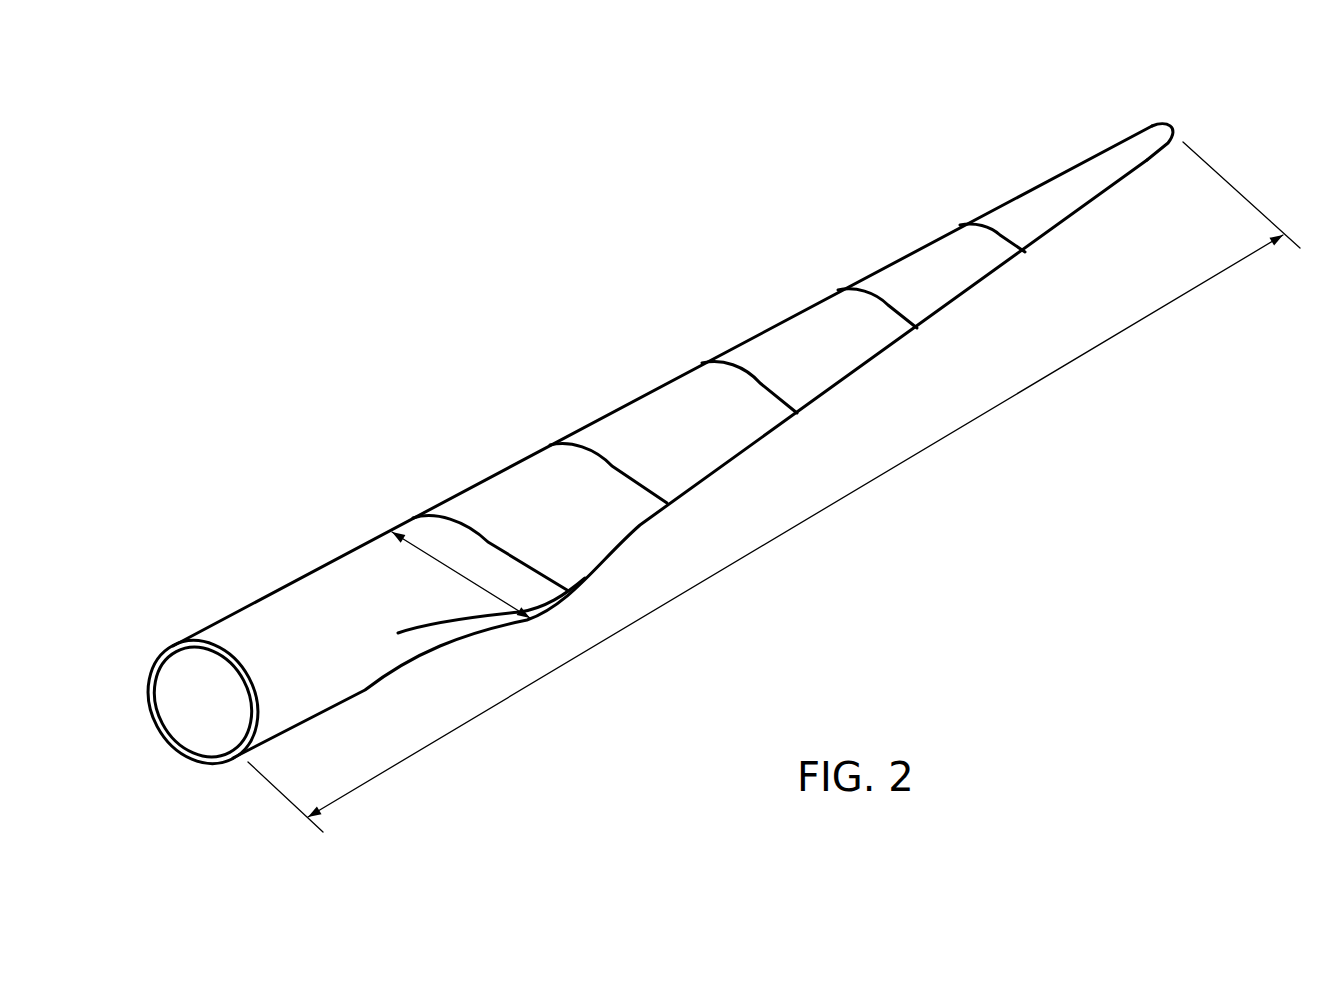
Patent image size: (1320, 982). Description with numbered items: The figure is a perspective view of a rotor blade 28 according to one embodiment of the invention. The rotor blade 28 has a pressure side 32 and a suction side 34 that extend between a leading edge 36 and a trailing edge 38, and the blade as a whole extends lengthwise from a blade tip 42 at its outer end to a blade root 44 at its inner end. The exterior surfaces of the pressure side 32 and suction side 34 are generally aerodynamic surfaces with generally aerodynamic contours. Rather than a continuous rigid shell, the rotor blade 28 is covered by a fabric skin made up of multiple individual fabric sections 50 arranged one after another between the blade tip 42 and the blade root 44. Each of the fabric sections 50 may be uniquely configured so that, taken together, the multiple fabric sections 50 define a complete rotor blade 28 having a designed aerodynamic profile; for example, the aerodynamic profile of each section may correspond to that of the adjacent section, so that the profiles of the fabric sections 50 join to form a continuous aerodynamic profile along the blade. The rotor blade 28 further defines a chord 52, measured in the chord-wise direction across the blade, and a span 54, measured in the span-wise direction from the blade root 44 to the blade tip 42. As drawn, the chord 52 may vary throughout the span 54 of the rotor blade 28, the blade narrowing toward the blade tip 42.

The rotor blade 28 is at (713, 449).
The pressure side 32 is at (440, 655).
The suction side 34 is at (547, 527).
The leading edge 36 is at (367, 543).
The trailing edge 38 is at (607, 563).
The blade tip 42 is at (1183, 113).
The blade root 44 is at (203, 729).
The fabric sections 50 is at (960, 277).
The chord 52 is at (467, 582).
The span 54 is at (893, 478).